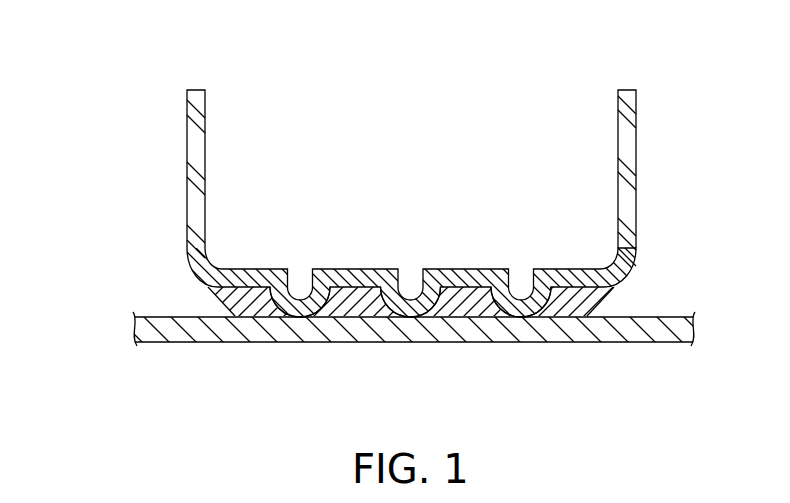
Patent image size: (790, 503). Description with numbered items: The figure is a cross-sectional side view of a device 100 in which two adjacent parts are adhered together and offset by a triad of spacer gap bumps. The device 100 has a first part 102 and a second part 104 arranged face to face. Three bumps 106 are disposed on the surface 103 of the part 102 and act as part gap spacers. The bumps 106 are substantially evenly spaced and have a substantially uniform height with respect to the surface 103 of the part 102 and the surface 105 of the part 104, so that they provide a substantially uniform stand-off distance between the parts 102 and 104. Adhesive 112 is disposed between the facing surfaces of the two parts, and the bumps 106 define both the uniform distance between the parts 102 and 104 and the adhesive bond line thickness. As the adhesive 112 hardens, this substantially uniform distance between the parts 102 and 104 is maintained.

The device 100 is at (116, 44).
The part 102 is at (195, 148).
The surface 103 is at (208, 292).
The part 104 is at (150, 338).
The surface 105 is at (197, 316).
The bumps 106 is at (302, 317).
The adhesive 112 is at (612, 305).